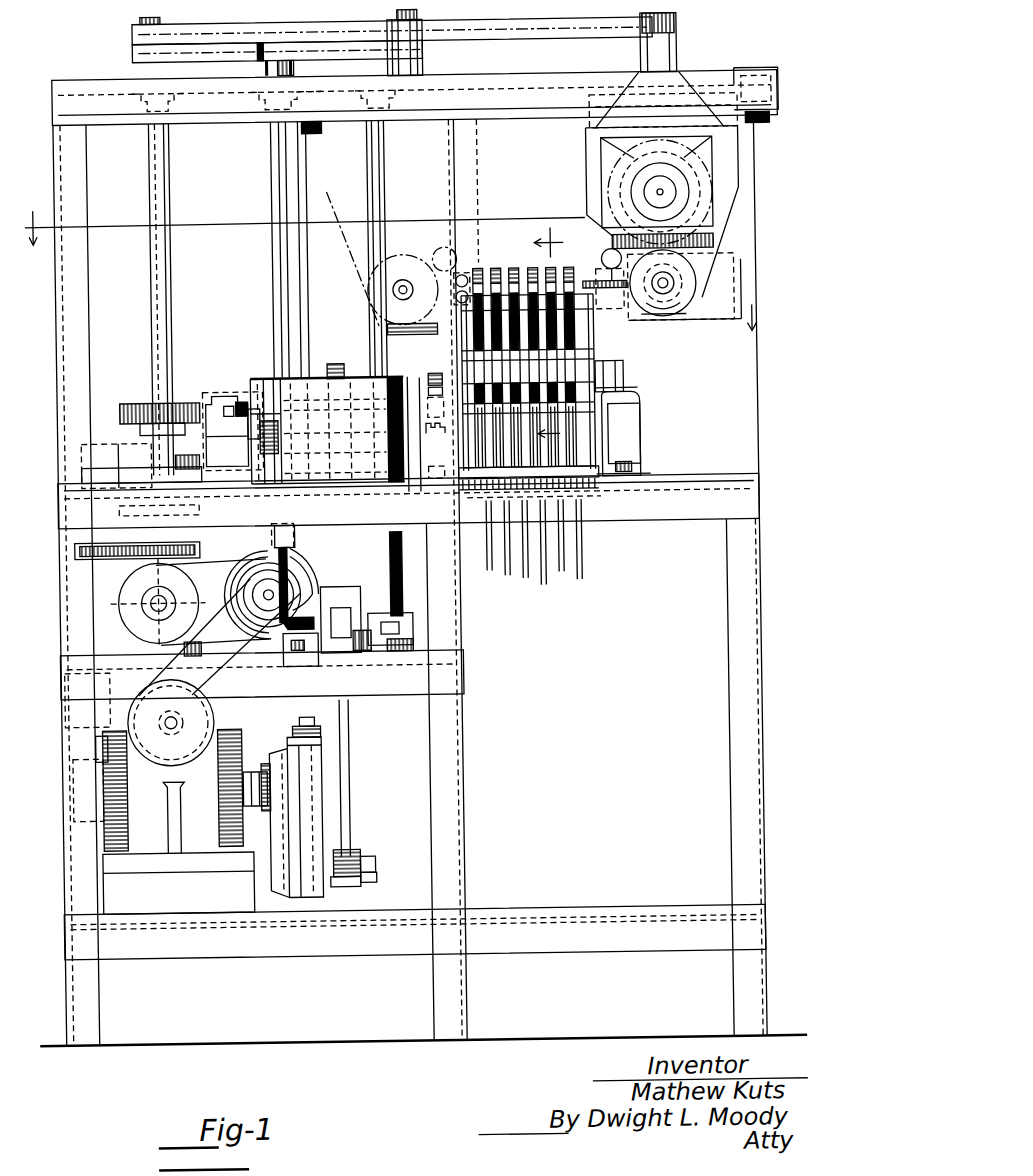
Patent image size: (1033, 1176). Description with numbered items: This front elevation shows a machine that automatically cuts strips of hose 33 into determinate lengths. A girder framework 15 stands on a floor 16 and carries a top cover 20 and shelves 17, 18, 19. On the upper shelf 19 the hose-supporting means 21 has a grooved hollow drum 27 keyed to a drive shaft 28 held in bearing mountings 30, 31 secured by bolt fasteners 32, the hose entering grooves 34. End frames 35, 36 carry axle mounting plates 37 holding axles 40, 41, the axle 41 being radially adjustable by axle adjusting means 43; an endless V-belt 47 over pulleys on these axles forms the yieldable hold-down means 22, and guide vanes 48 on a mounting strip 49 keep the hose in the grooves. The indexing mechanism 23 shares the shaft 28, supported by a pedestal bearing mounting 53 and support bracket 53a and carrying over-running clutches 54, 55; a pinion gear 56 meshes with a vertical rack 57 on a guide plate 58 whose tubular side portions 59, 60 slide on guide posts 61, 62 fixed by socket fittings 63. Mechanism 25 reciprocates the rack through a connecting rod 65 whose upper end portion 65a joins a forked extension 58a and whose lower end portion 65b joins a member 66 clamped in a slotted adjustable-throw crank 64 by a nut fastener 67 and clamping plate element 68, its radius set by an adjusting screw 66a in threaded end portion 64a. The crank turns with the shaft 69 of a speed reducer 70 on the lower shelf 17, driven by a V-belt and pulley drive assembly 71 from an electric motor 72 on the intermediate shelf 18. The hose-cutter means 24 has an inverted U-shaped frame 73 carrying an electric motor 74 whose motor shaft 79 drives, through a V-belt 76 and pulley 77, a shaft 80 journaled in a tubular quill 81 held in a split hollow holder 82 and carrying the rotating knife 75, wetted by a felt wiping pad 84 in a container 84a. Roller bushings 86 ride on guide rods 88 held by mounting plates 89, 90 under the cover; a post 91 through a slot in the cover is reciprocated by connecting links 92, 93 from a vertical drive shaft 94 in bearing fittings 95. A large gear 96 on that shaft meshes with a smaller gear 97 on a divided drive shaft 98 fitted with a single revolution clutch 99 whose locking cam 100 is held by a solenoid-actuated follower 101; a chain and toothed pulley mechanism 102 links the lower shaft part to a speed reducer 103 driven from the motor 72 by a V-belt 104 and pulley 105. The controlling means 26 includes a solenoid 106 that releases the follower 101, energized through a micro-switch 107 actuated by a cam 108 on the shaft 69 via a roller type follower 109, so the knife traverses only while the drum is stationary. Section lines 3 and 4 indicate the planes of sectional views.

The section line 3- 3 is at (393, 285).
The section line 4- 4 is at (541, 337).
The girder framework 15 is at (762, 872).
The floor 16 is at (648, 1037).
The lower shelf 17 is at (453, 910).
The intermediate shelf 18 is at (446, 652).
The upper shelf 19 is at (754, 484).
The top cover 20 is at (64, 78).
The hose-supporting means 21 is at (658, 418).
The yieldable hold-down means 22 is at (508, 257).
The indexing mechanism 23 is at (322, 298).
The hose-cutter means 24 is at (740, 239).
The mechanism for effecting reciprocating movement 25 is at (184, 354).
The means for controlling sequential operation 26 is at (96, 438).
The hollow drum 27 is at (564, 500).
The drive shaft 28 is at (230, 398).
The bearing mounting 30 is at (645, 447).
The inner bearing mounting 31 is at (422, 460).
The bolt fasteners 32 is at (640, 468).
The strips of hose 33 is at (546, 585).
The grooves 34 is at (564, 505).
The end frame 35 is at (471, 275).
The end frame 36 is at (606, 250).
The lower axle mounting plate 37 is at (640, 392).
The lower axle 40 is at (627, 380).
The intermediate axle 41 is at (600, 272).
The axle adjusting means 43 is at (437, 250).
The endless V-belt 47 is at (575, 348).
The guide vanes 48 is at (543, 486).
The mounting strip 49 is at (652, 475).
The roller bearing pedestal mounting 53 is at (222, 392).
The support bracket 53a is at (256, 394).
The over-running clutch 54 is at (300, 374).
The over-running clutch 55 is at (354, 374).
The pinion gear 56 is at (340, 358).
The vertical rack 57 is at (284, 522).
The guide plate 58 is at (411, 625).
The forked extension 58a is at (360, 650).
The tubular side portion 59 is at (403, 604).
The tubular side portion 60 is at (279, 544).
The guide post 61 is at (381, 164).
The guide post 62 is at (304, 184).
The socket fittings 63 is at (390, 150).
The adjustable-throw crank 64 is at (318, 793).
The end portion of crank 64a is at (318, 742).
The connecting rod 65 is at (276, 140).
The tubular upper end portion 65a is at (338, 650).
The tubular lower end portion 65b is at (372, 876).
The projecting member 66 is at (292, 896).
The adjusting screw 66a is at (312, 720).
The nut fastener 67 is at (371, 860).
The clamping plate element 68 is at (345, 884).
The shaft of speed reducer 69 is at (252, 803).
The speed reducer 70 is at (100, 850).
The V-belt and pulley drive assembly 71 is at (239, 712).
The electric motor 72 is at (262, 548).
The U-shaped frame 73 is at (607, 158).
The electric motor 74 is at (615, 178).
The rotating knife 75 is at (700, 270).
The V-belt 76 is at (612, 220).
The pulley 77 is at (706, 258).
The motor shaft 79 is at (650, 194).
The shaft 80 is at (678, 286).
The tubular quill 81 is at (690, 300).
The split hollow holder 82 is at (690, 314).
The felt wiping pad 84 is at (374, 305).
The liquid-tight container 84a is at (391, 326).
The roller bushing 86 is at (590, 98).
The guide rod 88 is at (763, 74).
The mounting plate 89 is at (770, 126).
The mounting plate 90 is at (328, 132).
The post 91 is at (431, 66).
The connecting link 92 is at (565, 37).
The second connecting link 93 is at (433, 50).
The vertical drive shaft 94 is at (277, 165).
The bearing fittings 95 is at (142, 126).
The large gear 96 is at (242, 372).
The smaller gear 97 is at (143, 398).
The divided drive shaft 98 is at (153, 211).
The single revolution clutch 99 is at (120, 508).
The locking cam 100 is at (83, 460).
The solenoid-actuated follower 101 is at (158, 456).
The chain and toothed pulley mechanism 102 is at (75, 543).
The speed reducer 103 is at (118, 596).
The V-belt 104 is at (290, 652).
The pulley 105 is at (118, 610).
The solenoid 106 is at (100, 480).
The micro-switch 107 is at (66, 703).
The cam 108 is at (70, 812).
The roller type follower 109 is at (93, 740).